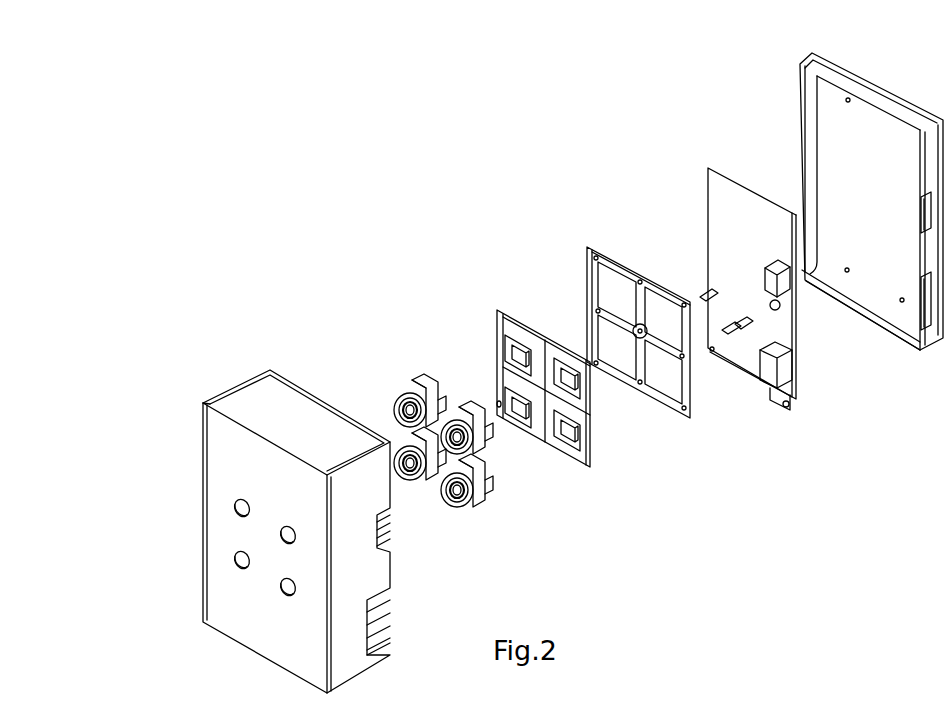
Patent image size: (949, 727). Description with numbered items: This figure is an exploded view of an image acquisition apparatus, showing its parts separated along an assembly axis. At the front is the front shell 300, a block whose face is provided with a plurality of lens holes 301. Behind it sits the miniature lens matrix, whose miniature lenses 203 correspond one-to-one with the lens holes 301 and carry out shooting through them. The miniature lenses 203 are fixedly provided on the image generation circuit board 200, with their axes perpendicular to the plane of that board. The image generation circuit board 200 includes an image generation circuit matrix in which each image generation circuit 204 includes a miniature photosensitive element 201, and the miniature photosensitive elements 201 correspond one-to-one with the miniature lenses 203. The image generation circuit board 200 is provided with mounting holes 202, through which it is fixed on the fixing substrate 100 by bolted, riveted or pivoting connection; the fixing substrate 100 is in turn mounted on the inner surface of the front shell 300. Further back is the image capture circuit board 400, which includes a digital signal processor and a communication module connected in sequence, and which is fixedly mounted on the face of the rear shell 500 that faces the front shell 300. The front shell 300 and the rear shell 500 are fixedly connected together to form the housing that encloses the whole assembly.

The fixing substrate 100 is at (657, 283).
The image generation circuit board 200 is at (454, 248).
The miniature photosensitive element 201 is at (497, 312).
The mounting hole 202 is at (583, 363).
The miniature lens 203 is at (400, 400).
The image generation circuit 204 is at (497, 403).
The front shell 300 is at (302, 422).
The lens hole 301 is at (233, 497).
The image capture circuit board 400 is at (748, 190).
The rear shell 500 is at (843, 153).